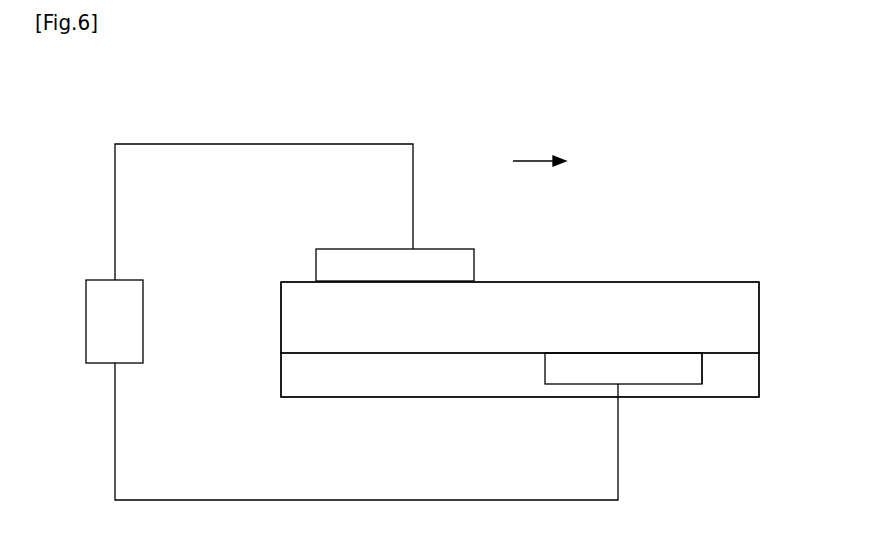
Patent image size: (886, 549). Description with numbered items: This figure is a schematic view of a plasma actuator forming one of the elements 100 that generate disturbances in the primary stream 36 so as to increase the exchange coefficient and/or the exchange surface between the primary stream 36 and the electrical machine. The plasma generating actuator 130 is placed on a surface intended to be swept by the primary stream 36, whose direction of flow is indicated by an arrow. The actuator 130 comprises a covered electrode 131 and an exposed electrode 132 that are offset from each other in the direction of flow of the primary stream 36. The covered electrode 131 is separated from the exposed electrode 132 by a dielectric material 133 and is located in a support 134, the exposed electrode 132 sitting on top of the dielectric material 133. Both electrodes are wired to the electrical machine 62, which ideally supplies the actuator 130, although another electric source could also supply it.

The primary stream 36 is at (534, 159).
The electrical machine 62 is at (96, 365).
The elements 100 is at (705, 368).
The plasma generating actuator 130 is at (272, 242).
The covered electrode 131 is at (640, 386).
The exposed electrode 132 is at (450, 245).
The dielectric material 133 is at (298, 330).
The support 134 is at (349, 386).